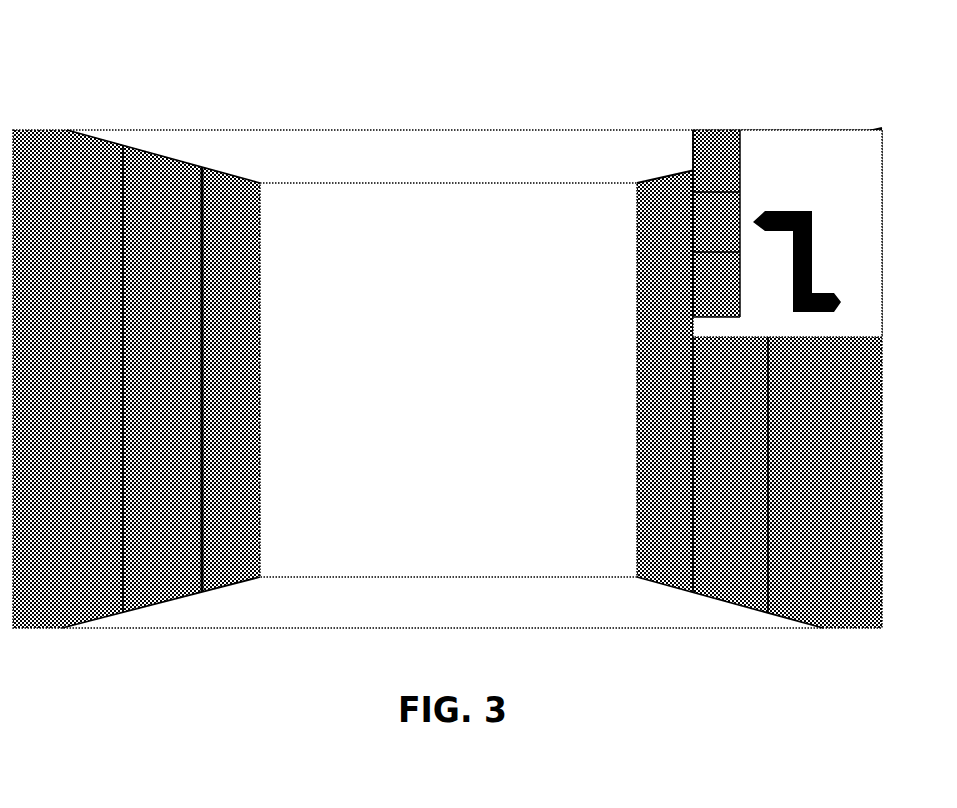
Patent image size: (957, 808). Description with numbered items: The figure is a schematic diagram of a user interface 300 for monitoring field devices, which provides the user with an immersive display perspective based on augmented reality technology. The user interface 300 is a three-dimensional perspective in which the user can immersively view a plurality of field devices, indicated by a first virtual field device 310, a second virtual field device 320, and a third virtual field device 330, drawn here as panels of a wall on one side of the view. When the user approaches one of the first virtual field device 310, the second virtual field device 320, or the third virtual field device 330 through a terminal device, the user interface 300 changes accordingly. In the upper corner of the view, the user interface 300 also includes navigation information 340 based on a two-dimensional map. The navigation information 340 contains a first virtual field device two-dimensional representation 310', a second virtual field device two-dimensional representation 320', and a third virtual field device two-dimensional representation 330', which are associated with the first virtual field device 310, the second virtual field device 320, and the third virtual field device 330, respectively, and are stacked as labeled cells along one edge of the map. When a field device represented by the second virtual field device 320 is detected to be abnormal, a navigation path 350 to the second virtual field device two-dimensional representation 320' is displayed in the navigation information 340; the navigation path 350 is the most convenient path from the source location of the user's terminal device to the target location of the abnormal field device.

The user interface 300 is at (146, 51).
The first virtual field device 310 is at (288, 379).
The second virtual field device 320 is at (249, 378).
The third virtual field device 330 is at (194, 379).
The navigation information 340 is at (799, 220).
The navigation path 350 is at (786, 210).
The first virtual field device two-dimensional representation 310' is at (716, 161).
The second virtual field device two-dimensional representation 320' is at (716, 222).
The third virtual field device two-dimensional representation 330' is at (716, 284).